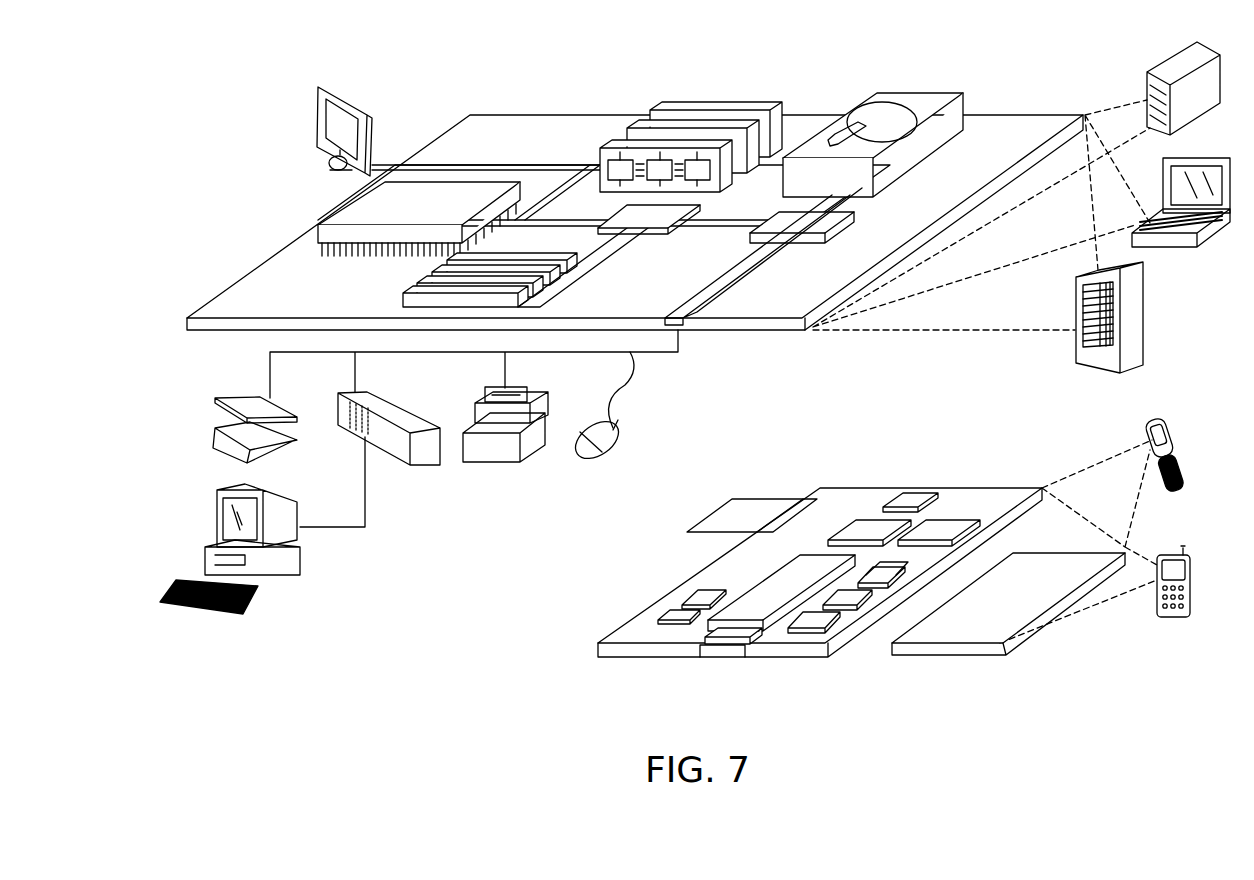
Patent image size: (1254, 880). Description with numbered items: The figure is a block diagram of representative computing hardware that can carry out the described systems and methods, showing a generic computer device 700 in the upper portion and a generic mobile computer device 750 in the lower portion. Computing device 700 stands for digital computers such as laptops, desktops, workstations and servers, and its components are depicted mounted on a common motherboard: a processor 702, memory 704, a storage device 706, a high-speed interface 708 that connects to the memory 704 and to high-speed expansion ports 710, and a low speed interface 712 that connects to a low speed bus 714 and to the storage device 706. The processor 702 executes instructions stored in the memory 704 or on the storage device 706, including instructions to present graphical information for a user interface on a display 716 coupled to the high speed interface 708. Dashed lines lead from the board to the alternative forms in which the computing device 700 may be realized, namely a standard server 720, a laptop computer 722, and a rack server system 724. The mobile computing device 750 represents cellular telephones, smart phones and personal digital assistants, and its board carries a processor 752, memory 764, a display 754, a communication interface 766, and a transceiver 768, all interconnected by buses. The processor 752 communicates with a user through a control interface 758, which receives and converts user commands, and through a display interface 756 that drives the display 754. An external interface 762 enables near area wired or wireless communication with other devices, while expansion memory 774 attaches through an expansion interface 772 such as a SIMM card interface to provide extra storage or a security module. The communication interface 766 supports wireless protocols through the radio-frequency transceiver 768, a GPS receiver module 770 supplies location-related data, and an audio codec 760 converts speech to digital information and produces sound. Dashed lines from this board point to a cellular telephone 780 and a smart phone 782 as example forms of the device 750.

The generic computer device 700 is at (433, 73).
The processor 702 is at (340, 212).
The memory 704 is at (716, 118).
The storage device 706 is at (908, 98).
The high-speed interface 708 is at (658, 215).
The high-speed expansion ports 710 is at (422, 290).
The low speed interface 712 is at (776, 222).
The low speed bus 714 is at (684, 308).
The display 716 is at (325, 88).
The standard server 720 is at (1158, 68).
The laptop computer 722 is at (1212, 156).
The rack server system 724 is at (1146, 318).
The generic mobile computer device 750 is at (560, 660).
The processor 752 is at (757, 591).
The display 754 is at (1040, 567).
The display interface 756 is at (832, 630).
The control interface 758 is at (855, 600).
The audio codec 760 is at (885, 575).
The external interface 762 is at (723, 650).
The memory 764 is at (690, 603).
The communication interface 766 is at (868, 520).
The transceiver 768 is at (945, 522).
The GPS receiver module 770 is at (908, 495).
The expansion interface 772 is at (803, 497).
The expansion memory 774 is at (733, 497).
The cellular telephone 780 is at (1153, 420).
The smart phone 782 is at (1170, 553).